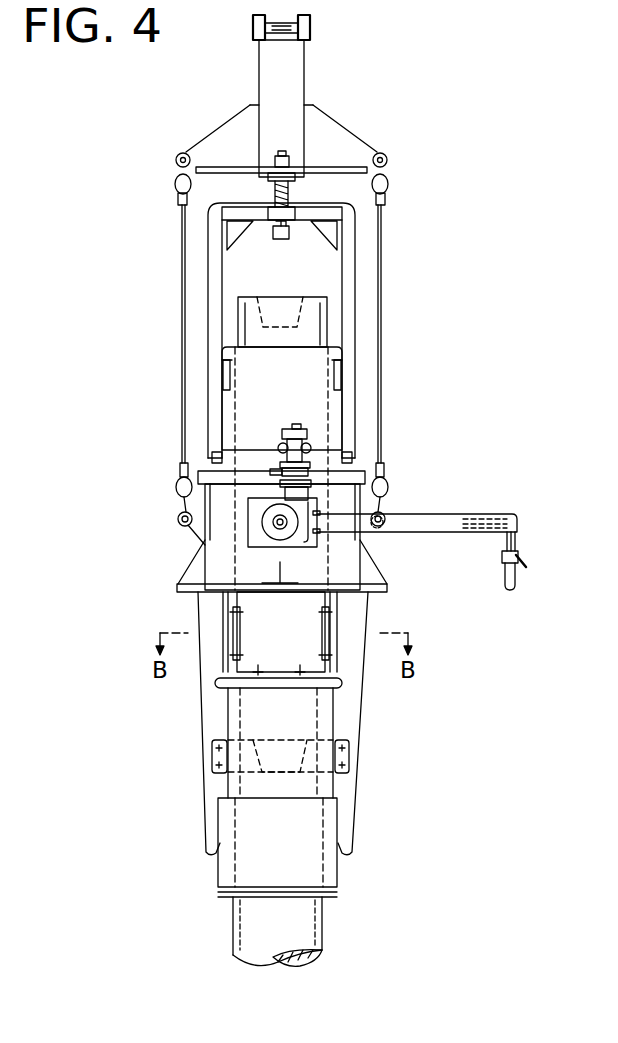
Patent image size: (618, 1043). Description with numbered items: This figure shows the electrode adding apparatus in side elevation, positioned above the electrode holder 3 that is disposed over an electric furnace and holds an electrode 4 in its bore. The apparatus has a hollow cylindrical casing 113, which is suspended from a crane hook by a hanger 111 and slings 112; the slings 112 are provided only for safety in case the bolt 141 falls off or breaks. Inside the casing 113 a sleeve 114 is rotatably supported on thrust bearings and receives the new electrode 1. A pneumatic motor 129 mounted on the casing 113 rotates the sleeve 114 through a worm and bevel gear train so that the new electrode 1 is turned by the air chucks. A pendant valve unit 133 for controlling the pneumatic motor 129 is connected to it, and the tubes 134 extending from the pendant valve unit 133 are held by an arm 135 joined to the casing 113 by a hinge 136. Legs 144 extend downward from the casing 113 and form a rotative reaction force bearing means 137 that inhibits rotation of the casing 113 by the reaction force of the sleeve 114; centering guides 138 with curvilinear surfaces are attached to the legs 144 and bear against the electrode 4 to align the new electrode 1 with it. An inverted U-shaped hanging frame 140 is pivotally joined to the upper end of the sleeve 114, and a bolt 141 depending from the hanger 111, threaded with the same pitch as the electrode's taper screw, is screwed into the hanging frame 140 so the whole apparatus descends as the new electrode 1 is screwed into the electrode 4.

The new electrode 1 is at (310, 328).
The electrode holder 3 is at (338, 877).
The electrode 4 is at (293, 923).
The hanger 111 is at (328, 124).
The slings 112 is at (383, 363).
The hollow cylindrical casing 113 is at (218, 553).
The sleeve 114 is at (245, 412).
The pneumatic motor 129 is at (310, 447).
The pendant valve unit 133 is at (527, 567).
The tubes 134 is at (513, 537).
The arm 135 is at (438, 523).
The hinge 136 is at (340, 532).
The rotative reaction force bearing means 137 is at (198, 745).
The centering guides 138 is at (349, 753).
The inverted U-shaped hanging frame 140 is at (348, 269).
The bolt 141 is at (275, 193).
The legs 144 is at (208, 823).